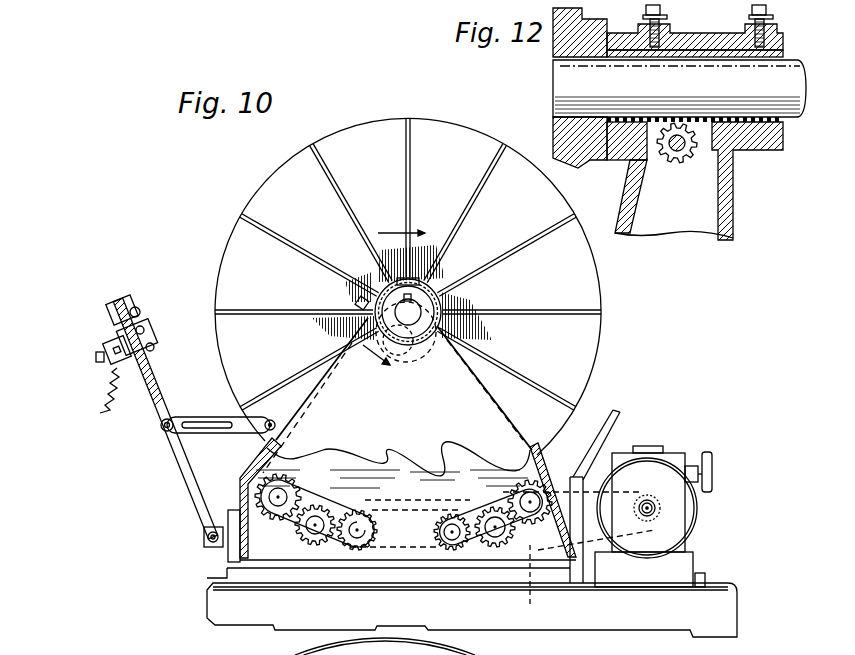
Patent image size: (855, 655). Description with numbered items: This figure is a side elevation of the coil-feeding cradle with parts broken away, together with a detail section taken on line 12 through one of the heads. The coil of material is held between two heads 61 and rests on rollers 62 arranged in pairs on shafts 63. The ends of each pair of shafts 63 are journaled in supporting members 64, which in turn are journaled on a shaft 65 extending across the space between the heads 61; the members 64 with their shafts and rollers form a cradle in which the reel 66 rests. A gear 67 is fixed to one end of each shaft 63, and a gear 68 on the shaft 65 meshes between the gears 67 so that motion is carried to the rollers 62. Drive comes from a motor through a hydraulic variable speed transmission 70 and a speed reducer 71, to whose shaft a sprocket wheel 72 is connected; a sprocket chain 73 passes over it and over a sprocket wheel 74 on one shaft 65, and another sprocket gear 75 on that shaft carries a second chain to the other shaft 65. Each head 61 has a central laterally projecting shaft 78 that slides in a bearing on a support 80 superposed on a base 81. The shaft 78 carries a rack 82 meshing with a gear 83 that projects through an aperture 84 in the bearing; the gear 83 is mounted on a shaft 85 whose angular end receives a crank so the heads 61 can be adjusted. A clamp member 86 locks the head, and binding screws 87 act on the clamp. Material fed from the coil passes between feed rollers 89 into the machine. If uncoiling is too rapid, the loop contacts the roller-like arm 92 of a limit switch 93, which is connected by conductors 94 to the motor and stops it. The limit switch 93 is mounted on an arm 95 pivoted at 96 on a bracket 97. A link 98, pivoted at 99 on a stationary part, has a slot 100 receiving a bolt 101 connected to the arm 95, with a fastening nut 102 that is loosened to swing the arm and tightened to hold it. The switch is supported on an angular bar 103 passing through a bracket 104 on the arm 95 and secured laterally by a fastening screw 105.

In FIG. 10, the section line 12 is at (391, 301).
In FIG. 10, the holders or heads 61 is at (354, 129).
In FIG. 12, the holders or heads 61 is at (556, 50).
In FIG. 10, the rollers 62 is at (262, 486).
In FIG. 10, the shafts 63 is at (280, 512).
In FIG. 10, the supporting members 64 is at (305, 498).
In FIG. 10, the shaft 65 is at (314, 540).
In FIG. 10, the reel 66 is at (363, 547).
In FIG. 10, the gear 67 is at (300, 480).
In FIG. 10, the gear 68 is at (322, 520).
In FIG. 10, the hydraulic variable speed transmission 70 is at (673, 457).
In FIG. 10, the speed reducer 71 is at (690, 507).
In FIG. 10, the sprocket wheel 72 is at (657, 518).
In FIG. 10, the sprocket chain 73 is at (600, 528).
In FIG. 10, the sprocket wheel 74 is at (536, 586).
In FIG. 10, the sprocket gear 75 is at (498, 500).
In FIG. 10, the shaft 78 is at (416, 318).
In FIG. 12, the shaft 78 is at (562, 93).
In FIG. 10, the support 80 is at (473, 382).
In FIG. 12, the support 80 is at (733, 218).
In FIG. 10, the base 81 is at (574, 588).
In FIG. 10, the rack 82 is at (447, 326).
In FIG. 12, the rack 82 is at (785, 126).
In FIG. 10, the gear 83 is at (425, 348).
In FIG. 12, the gear 83 is at (690, 154).
In FIG. 12, the aperture 84 is at (733, 182).
In FIG. 10, the shaft 85 is at (357, 303).
In FIG. 12, the shaft 85 is at (673, 152).
In FIG. 12, the clamp member 86 is at (720, 34).
In FIG. 12, the binding screws 87 is at (661, 10).
In FIG. 10, the feed rollers 89 is at (417, 266).
In FIG. 10, the arm or member 92 is at (136, 307).
In FIG. 10, the limit switch 93 is at (112, 323).
In FIG. 10, the conductors 94 is at (102, 412).
In FIG. 10, the arm or member 95 is at (156, 388).
In FIG. 10, the pivot 96 is at (210, 543).
In FIG. 10, the bracket 97 is at (226, 544).
In FIG. 10, the link or member 98 is at (240, 433).
In FIG. 10, the pivot 99 is at (282, 427).
In FIG. 10, the slot 100 is at (210, 409).
In FIG. 10, the bolt 101 is at (165, 432).
In FIG. 10, the fastening nut 102 is at (168, 450).
In FIG. 10, the bar or rod 103 is at (110, 373).
In FIG. 10, the bearing or bracket 104 is at (107, 348).
In FIG. 10, the fastening screw 105 is at (100, 362).